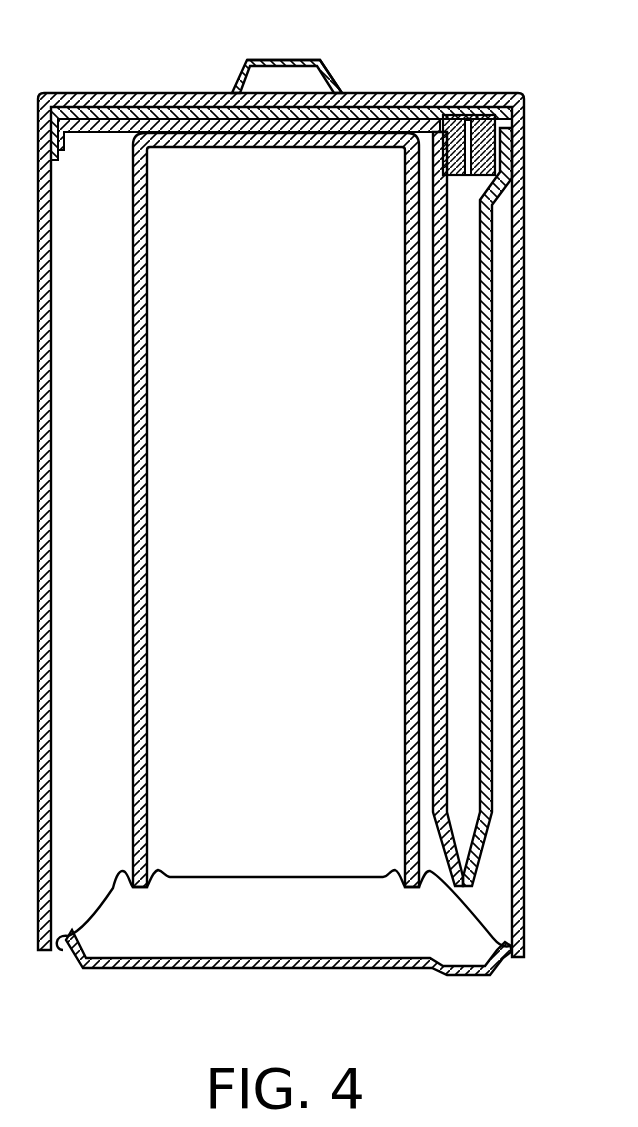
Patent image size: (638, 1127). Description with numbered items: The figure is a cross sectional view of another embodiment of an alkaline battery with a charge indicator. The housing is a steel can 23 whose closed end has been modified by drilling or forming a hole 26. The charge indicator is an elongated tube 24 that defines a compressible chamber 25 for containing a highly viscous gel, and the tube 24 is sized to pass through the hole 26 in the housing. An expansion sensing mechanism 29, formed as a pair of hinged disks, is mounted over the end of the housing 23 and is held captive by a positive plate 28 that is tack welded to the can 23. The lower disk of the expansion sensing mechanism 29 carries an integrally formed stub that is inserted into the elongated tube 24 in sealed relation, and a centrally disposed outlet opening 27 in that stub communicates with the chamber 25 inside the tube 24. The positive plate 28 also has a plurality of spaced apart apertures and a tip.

The steel can 23 is at (523, 373).
The elongated tube 24 is at (490, 662).
The compressible chamber 25 is at (468, 576).
The hole 26 is at (522, 176).
The outlet opening 27 is at (441, 213).
The positive plate 28 is at (238, 92).
The expansion sensing mechanism 29 is at (316, 100).